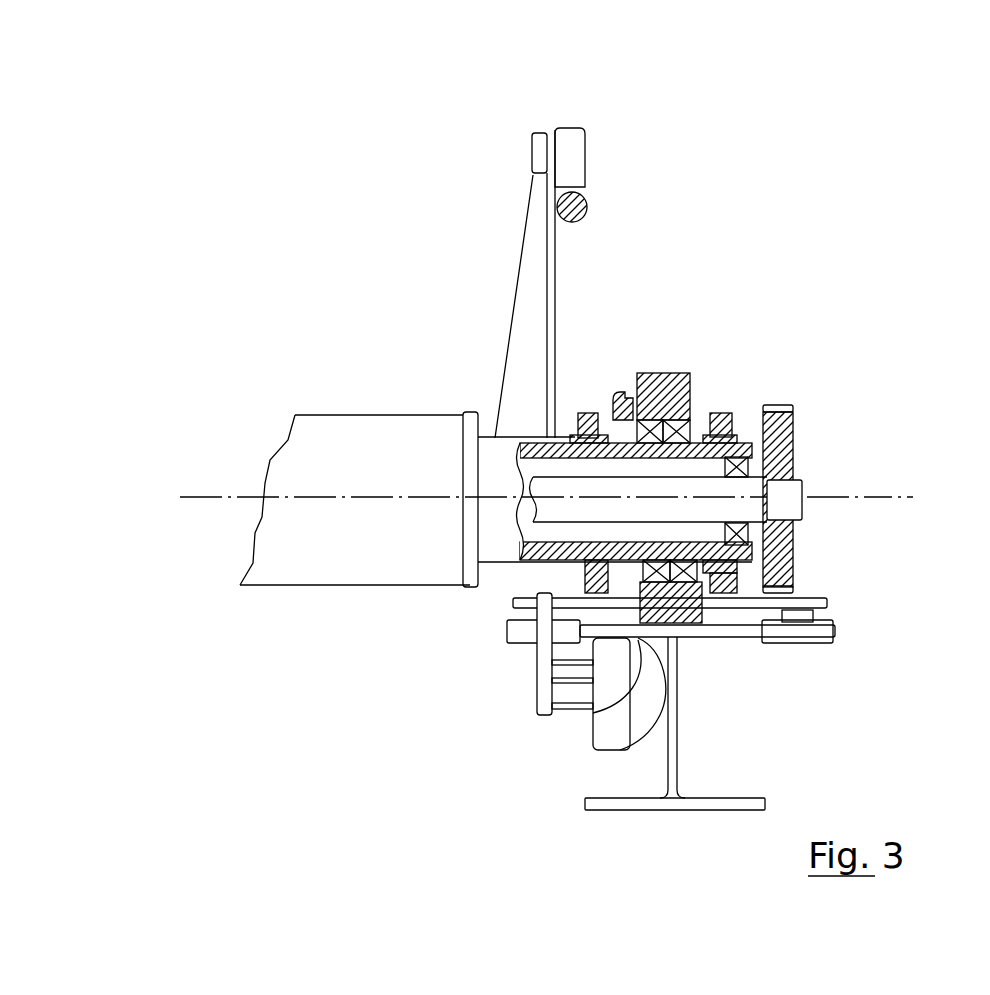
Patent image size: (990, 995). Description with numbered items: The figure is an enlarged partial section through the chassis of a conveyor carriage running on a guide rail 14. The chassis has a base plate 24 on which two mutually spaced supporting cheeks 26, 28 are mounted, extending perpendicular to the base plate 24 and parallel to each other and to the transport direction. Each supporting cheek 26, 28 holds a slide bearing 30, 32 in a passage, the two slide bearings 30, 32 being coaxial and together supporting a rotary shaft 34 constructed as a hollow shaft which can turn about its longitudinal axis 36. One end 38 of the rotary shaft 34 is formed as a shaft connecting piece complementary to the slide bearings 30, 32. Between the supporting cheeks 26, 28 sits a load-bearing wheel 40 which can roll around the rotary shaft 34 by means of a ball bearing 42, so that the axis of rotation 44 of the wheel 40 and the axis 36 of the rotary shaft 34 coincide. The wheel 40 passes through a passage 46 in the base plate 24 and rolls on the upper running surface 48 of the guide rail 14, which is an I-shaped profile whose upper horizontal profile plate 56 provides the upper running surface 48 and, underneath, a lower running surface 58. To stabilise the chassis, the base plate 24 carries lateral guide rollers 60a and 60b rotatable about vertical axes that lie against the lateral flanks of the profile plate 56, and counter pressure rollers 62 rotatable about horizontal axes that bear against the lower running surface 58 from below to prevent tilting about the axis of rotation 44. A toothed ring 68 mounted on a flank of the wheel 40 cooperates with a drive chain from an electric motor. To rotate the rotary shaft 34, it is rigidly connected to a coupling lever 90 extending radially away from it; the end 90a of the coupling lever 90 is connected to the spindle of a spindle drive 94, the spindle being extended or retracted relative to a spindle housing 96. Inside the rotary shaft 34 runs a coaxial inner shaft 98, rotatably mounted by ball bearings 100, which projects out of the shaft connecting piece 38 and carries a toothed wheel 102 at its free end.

The guide rail 14 is at (677, 772).
The base plate 24 is at (820, 605).
The supporting cheek 26 is at (580, 413).
The supporting cheek 28 is at (765, 407).
The slide bearing 30 is at (616, 392).
The slide bearing 32 is at (769, 405).
The rotary shaft 34 is at (338, 602).
The longitudinal axis 36 is at (228, 498).
The end of the rotary shaft 38 is at (503, 450).
The load-bearing wheel 40 is at (715, 413).
The ball bearing 42 is at (740, 412).
The axis of rotation 44 is at (912, 497).
The passage 46 is at (617, 750).
The upper running surface 48 is at (720, 626).
The upper horizontal profile plate 56 is at (700, 606).
The lower running surface 58 is at (600, 713).
The lateral guide roller 60a is at (517, 632).
The lateral guide roller 60b is at (817, 630).
The counter pressure roller 62 is at (603, 668).
The toothed ring 68 is at (640, 378).
The coupling lever 90 is at (530, 310).
The end of the coupling lever 90a is at (535, 153).
The spindle drive 94 is at (634, 109).
The spindle housing 96 is at (567, 137).
The inner shaft 98 is at (802, 481).
The ball bearings 100 is at (748, 530).
The toothed wheel 102 is at (781, 422).